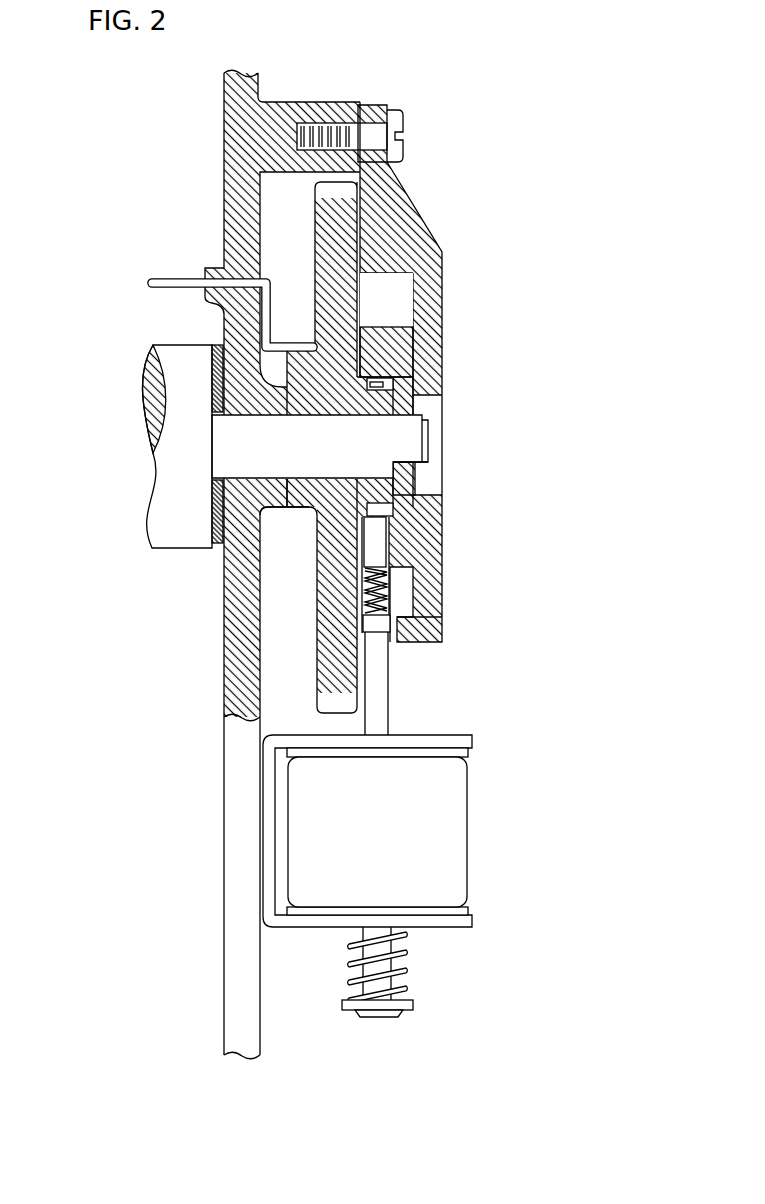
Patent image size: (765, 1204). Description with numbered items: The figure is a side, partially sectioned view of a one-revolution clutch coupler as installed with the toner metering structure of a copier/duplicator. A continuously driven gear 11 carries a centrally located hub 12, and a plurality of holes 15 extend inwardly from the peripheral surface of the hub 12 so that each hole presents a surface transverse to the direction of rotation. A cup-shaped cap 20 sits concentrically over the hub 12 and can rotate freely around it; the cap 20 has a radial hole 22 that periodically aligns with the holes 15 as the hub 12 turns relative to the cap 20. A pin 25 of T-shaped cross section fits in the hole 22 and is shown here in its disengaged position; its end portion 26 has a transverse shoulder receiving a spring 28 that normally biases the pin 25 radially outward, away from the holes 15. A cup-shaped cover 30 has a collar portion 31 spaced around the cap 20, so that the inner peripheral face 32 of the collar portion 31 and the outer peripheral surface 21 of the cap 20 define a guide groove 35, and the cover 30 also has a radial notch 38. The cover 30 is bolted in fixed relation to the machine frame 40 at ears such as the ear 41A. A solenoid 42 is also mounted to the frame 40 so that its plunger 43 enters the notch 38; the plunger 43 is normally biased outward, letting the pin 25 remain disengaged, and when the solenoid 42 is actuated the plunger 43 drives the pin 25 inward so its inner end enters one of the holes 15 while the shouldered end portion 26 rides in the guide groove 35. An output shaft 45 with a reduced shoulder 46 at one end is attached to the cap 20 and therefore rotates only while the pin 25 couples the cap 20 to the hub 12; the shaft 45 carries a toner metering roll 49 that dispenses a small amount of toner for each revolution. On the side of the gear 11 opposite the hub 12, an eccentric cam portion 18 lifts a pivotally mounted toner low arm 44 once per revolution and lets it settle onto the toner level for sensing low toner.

The gear 11 is at (330, 238).
The hub 12 is at (377, 408).
The holes 15 is at (393, 383).
The eccentric cam portion 18 is at (294, 510).
The cap 20 is at (405, 468).
The outer peripheral surface 21 is at (402, 321).
The hole 22 is at (394, 532).
The pin 25 is at (377, 552).
The end portion 26 is at (372, 623).
The spring 28 is at (362, 585).
The cover 30 is at (433, 289).
The collar portion 31 is at (407, 630).
The inner peripheral face 32 is at (413, 273).
The guide groove 35 is at (400, 303).
The notch 38 is at (400, 648).
The machine frame 40 is at (237, 805).
The ear 41A is at (376, 105).
The solenoid 42 is at (455, 862).
The plunger 43 is at (378, 695).
The toner low arm 44 is at (186, 283).
The output shaft 45 is at (277, 450).
The reduced shoulder 46 is at (405, 460).
The toner metering roll 49 is at (152, 518).